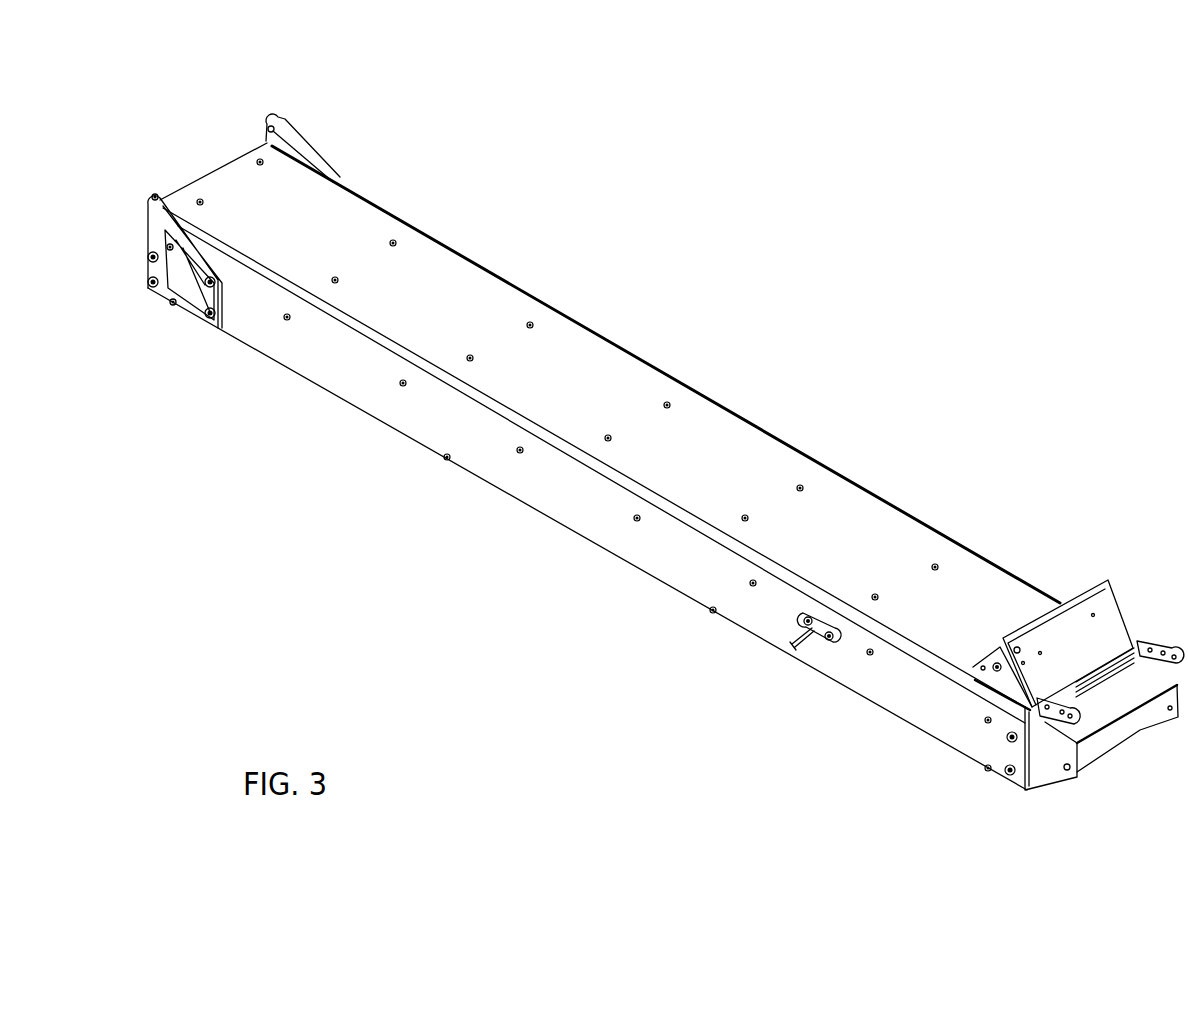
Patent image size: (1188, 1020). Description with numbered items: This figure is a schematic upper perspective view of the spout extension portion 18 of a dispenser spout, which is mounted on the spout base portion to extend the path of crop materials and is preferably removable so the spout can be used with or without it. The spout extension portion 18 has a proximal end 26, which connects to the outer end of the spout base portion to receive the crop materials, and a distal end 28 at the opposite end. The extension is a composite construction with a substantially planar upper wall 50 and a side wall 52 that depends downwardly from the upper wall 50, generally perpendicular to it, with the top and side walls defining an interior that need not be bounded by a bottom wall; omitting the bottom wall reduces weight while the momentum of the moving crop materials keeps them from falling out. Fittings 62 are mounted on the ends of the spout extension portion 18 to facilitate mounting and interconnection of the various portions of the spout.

The spout extension portion 18 is at (597, 255).
The proximal end 26 is at (218, 162).
The distal end 28 is at (1057, 780).
The upper wall 50 is at (622, 410).
The side wall 52 is at (342, 367).
The fittings 62 is at (1155, 648).